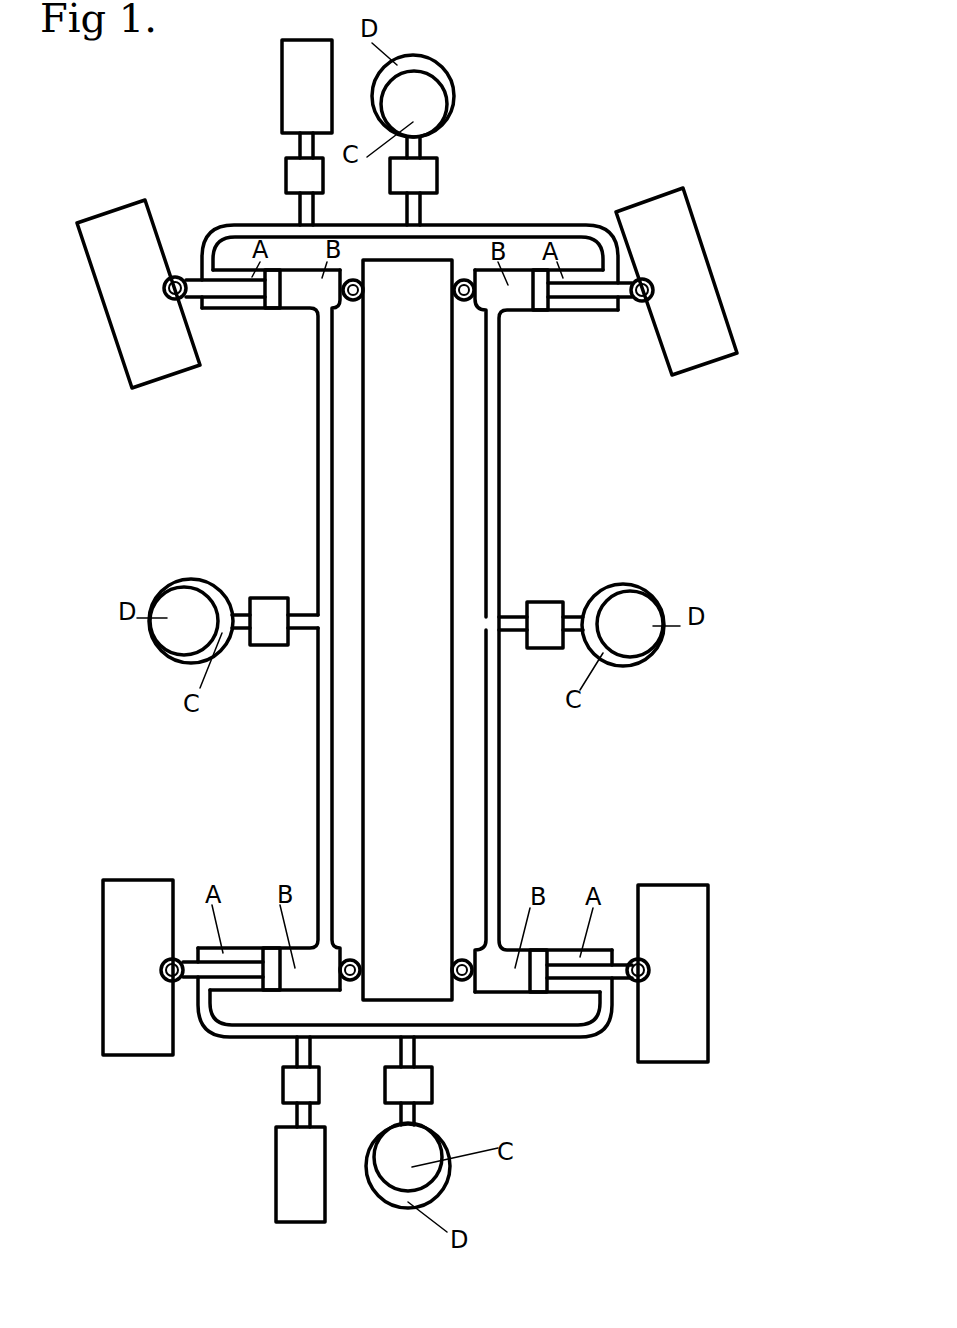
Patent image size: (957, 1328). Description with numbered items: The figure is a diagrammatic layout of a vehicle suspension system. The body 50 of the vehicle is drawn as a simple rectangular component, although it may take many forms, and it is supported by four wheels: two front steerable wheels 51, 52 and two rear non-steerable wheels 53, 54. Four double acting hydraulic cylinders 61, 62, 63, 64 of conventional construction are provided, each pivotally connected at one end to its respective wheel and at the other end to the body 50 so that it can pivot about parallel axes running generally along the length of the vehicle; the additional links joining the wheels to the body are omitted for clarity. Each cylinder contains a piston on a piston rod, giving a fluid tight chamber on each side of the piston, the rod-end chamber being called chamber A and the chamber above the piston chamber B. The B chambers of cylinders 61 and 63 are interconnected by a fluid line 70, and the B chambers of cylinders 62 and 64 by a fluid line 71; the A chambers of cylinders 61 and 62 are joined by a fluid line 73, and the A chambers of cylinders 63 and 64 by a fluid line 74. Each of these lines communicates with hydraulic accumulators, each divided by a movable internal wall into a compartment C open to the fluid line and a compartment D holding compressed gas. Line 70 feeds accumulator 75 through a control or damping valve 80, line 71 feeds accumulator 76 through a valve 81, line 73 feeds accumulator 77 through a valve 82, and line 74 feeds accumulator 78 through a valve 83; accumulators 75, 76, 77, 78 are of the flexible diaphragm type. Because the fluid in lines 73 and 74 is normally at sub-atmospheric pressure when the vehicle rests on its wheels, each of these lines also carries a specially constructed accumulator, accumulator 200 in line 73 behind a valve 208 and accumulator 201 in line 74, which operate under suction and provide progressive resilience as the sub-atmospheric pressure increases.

The body 50 is at (430, 452).
The front steerable wheel 51 is at (140, 317).
The front steerable wheel 52 is at (670, 250).
The rear non-steerable wheel 53 is at (138, 1010).
The rear non-steerable wheel 54 is at (690, 1020).
The double acting hydraulic cylinder 61 is at (253, 308).
The double acting hydraulic cylinder 62 is at (562, 312).
The double acting hydraulic cylinder 63 is at (278, 982).
The double acting hydraulic cylinder 64 is at (537, 995).
The fluid line 70 is at (318, 472).
The fluid line 71 is at (497, 507).
The fluid line 73 is at (268, 228).
The fluid line 74 is at (358, 1038).
The hydraulic accumulator 75 is at (158, 597).
The hydraulic accumulator 76 is at (650, 595).
The hydraulic accumulator 77 is at (455, 97).
The hydraulic accumulator 78 is at (391, 1184).
The control or damping valve 80 is at (277, 615).
The control or damping valve 81 is at (542, 612).
The control or damping valve 82 is at (437, 177).
The control or damping valve 83 is at (437, 1092).
The accumulator 200 is at (282, 70).
The accumulator 201 is at (282, 1191).
The control or damping valve 208 is at (298, 158).